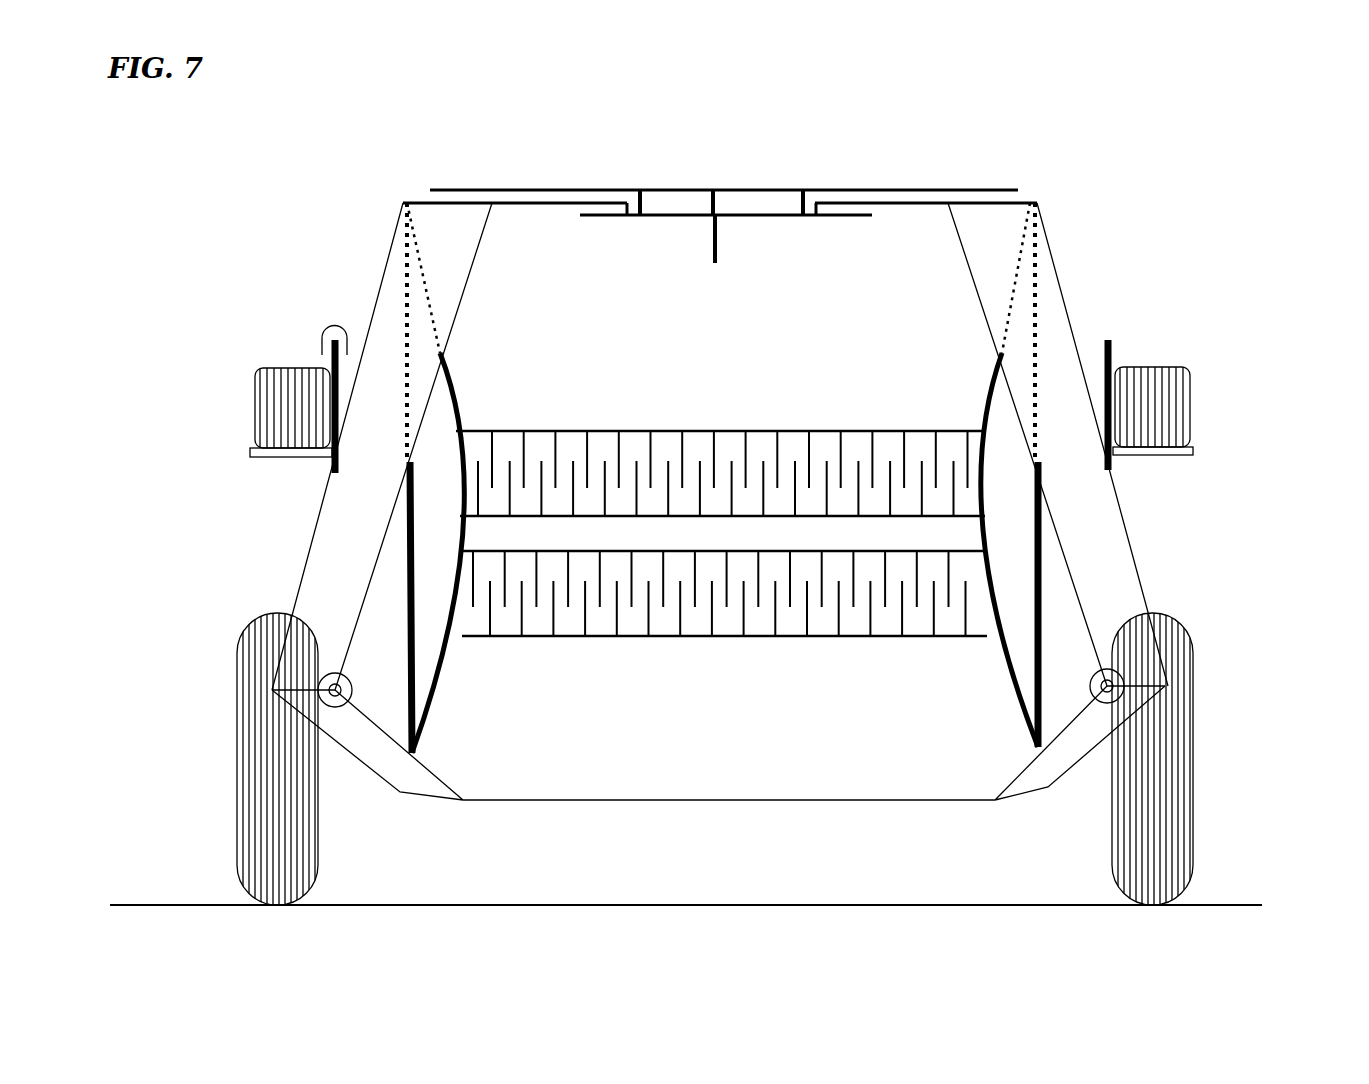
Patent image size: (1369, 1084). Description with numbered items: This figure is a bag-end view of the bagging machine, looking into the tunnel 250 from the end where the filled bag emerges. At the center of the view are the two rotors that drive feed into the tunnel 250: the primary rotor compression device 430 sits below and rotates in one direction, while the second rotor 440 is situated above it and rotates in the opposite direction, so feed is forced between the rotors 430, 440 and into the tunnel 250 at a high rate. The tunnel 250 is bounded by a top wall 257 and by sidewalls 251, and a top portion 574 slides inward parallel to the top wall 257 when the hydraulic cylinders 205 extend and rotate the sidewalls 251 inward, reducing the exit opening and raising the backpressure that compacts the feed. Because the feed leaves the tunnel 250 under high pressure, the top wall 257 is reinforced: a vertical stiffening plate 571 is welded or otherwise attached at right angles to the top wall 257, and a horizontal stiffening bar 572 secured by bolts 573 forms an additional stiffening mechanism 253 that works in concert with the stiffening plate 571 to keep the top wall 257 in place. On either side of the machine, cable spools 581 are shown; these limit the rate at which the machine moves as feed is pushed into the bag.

The hydraulic cylinder 205 is at (336, 672).
The tunnel 250 is at (683, 190).
The sidewall 251 is at (237, 655).
The stiffening mechanism 253 is at (774, 217).
The top wall 257 is at (747, 188).
The primary rotor compression device 430 is at (680, 637).
The second rotor 440 is at (763, 447).
The vertical stiffening plate 571 is at (713, 228).
The horizontal stiffening bar 572 is at (597, 217).
The bolt 573 is at (640, 189).
The top portion 574 is at (626, 218).
The cable spool 581 is at (265, 370).